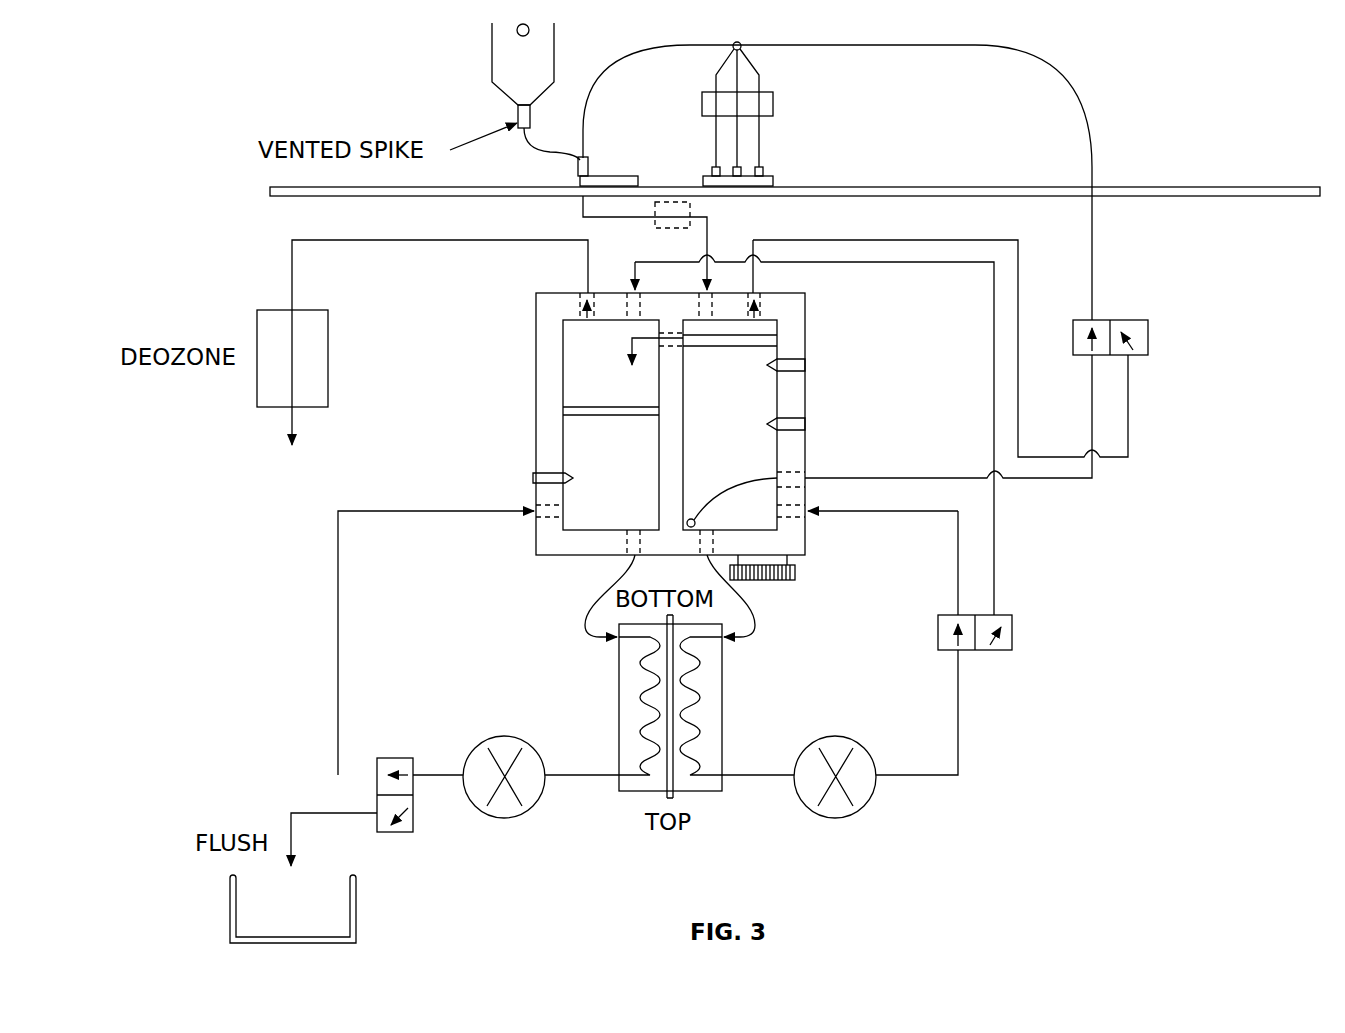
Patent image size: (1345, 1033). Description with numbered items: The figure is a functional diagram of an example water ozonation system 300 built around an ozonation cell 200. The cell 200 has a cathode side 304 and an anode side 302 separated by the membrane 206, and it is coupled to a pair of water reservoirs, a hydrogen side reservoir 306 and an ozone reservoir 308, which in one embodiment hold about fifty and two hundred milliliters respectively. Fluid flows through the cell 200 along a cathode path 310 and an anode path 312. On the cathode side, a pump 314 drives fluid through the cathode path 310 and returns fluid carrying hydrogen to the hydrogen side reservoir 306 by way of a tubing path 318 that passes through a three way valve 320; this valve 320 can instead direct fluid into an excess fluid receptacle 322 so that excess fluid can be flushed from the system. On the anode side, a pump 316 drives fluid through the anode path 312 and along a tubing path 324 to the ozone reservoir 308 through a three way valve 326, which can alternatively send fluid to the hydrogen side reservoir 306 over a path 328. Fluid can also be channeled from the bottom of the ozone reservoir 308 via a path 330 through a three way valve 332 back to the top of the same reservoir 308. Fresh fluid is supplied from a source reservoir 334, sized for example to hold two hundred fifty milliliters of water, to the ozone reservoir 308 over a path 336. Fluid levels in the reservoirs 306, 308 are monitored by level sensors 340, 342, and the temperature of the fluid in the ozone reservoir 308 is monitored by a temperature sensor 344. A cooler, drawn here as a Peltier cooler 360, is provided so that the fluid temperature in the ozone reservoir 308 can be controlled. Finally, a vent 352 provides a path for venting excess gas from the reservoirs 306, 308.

The ozonation cell 200 is at (650, 746).
The membrane 206 is at (667, 796).
The water ozonation system 300 is at (1050, 806).
The anode side 302 is at (757, 715).
The cathode side 304 is at (590, 698).
The hydrogen side reservoir 306 is at (560, 340).
The ozone reservoir 308 is at (781, 322).
The cathode path 310 is at (648, 660).
The anode path 312 is at (693, 657).
The pump 314 is at (489, 738).
The pump 316 is at (862, 745).
The tubing path 318 is at (336, 640).
The three way valve 320 is at (413, 795).
The excess fluid receptacle 322 is at (357, 905).
The tubing path 324 is at (961, 712).
The three way valve 326 is at (1003, 613).
The path 328 is at (960, 264).
The path 330 is at (1048, 80).
The three way valve 332 is at (1150, 340).
The reservoir 334 is at (556, 72).
The path 336 is at (632, 216).
The level sensor 340 is at (534, 472).
The level sensor 342 is at (808, 360).
The temperature sensor 344 is at (808, 418).
The vent 352 is at (585, 290).
The Peltier cooler 360 is at (762, 582).